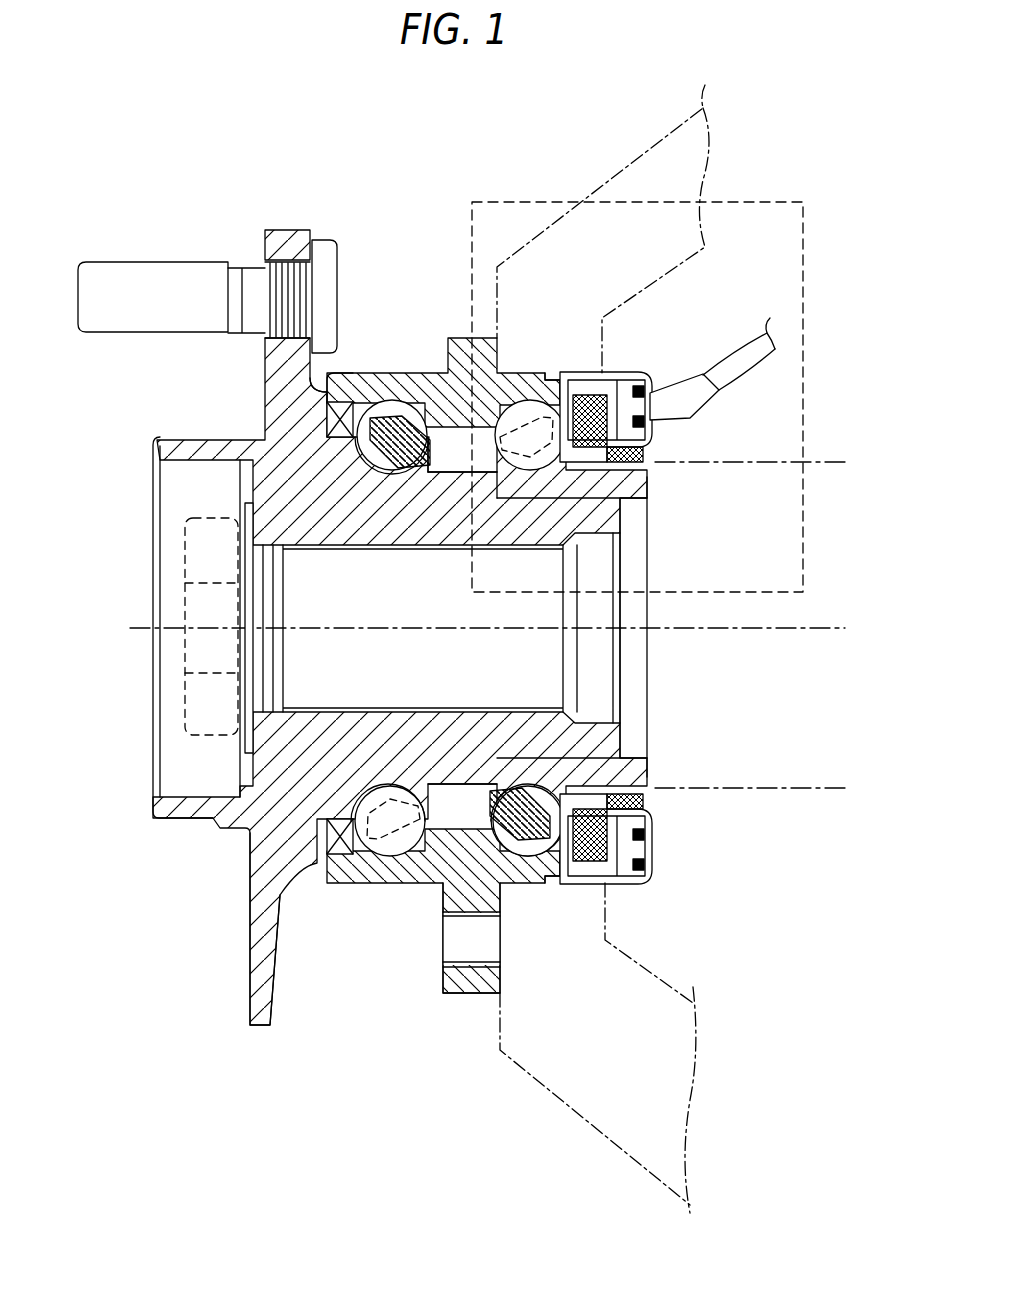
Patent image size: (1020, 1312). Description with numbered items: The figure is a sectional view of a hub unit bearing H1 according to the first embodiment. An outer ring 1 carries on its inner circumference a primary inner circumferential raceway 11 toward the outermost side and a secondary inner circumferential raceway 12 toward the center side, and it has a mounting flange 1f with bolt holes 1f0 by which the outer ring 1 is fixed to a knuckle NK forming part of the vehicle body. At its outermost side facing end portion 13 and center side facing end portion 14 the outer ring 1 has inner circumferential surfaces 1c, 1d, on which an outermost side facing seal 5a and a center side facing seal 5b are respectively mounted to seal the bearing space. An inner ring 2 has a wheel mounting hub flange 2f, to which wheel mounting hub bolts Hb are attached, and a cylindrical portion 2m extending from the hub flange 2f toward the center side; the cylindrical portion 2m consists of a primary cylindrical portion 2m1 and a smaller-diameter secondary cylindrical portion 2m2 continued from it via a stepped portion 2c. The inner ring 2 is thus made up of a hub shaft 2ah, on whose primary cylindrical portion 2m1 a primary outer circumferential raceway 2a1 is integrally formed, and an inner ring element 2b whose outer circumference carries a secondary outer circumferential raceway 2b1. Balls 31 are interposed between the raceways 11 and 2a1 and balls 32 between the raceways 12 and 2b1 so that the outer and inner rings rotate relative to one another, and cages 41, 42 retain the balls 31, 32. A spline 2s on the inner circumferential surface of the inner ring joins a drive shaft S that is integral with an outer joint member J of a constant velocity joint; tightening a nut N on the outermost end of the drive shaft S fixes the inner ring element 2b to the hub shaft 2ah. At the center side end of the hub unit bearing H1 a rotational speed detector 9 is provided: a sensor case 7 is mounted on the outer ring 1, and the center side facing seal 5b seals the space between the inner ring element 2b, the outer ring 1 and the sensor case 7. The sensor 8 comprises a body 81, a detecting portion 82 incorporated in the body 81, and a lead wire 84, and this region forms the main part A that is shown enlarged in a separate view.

The outer ring 1 is at (423, 867).
The inner circumferential surface 1c is at (327, 420).
The inner circumferential surface 1d is at (562, 400).
The mounting flange 1f is at (468, 987).
The bolt holes 1f0 is at (457, 940).
The inner ring 2 is at (203, 450).
The primary outer circumferential raceway 2a1 is at (370, 485).
The hub shaft 2ah is at (250, 828).
The inner ring element 2b is at (630, 775).
The secondary outer circumferential raceway 2b1 is at (537, 497).
The stepped portion 2c is at (497, 800).
The wheel mounting hub flange 2f is at (287, 240).
The cylindrical portion 2m is at (400, 520).
The primary cylindrical portion 2m1 is at (450, 470).
The secondary cylindrical portion 2m2 is at (513, 760).
The spline 2s is at (345, 712).
The outermost side facing seal 5a is at (330, 425).
The center side facing seal 5b is at (616, 848).
The sensor case 7 is at (625, 373).
The sensor 8 is at (700, 413).
The rotational speed detector 9 is at (668, 450).
The primary inner circumferential raceway 11 is at (395, 400).
The secondary inner circumferential raceway 12 is at (515, 410).
The outermost side facing end portion 13 is at (353, 373).
The center side facing end portion 14 is at (550, 887).
The balls 31 is at (370, 870).
The balls 32 is at (530, 847).
The cage 41 is at (430, 835).
The cage 42 is at (503, 797).
The body 81 is at (693, 397).
The detecting portion 82 is at (648, 410).
The lead wire 84 is at (742, 360).
The main part A is at (763, 202).
The hub unit bearing H1 is at (181, 555).
The wheel mounting hub bolts Hb is at (127, 285).
The outer joint member J is at (787, 463).
The nut N is at (183, 715).
The drive shaft S is at (312, 657).
The knuckle NK is at (615, 1112).